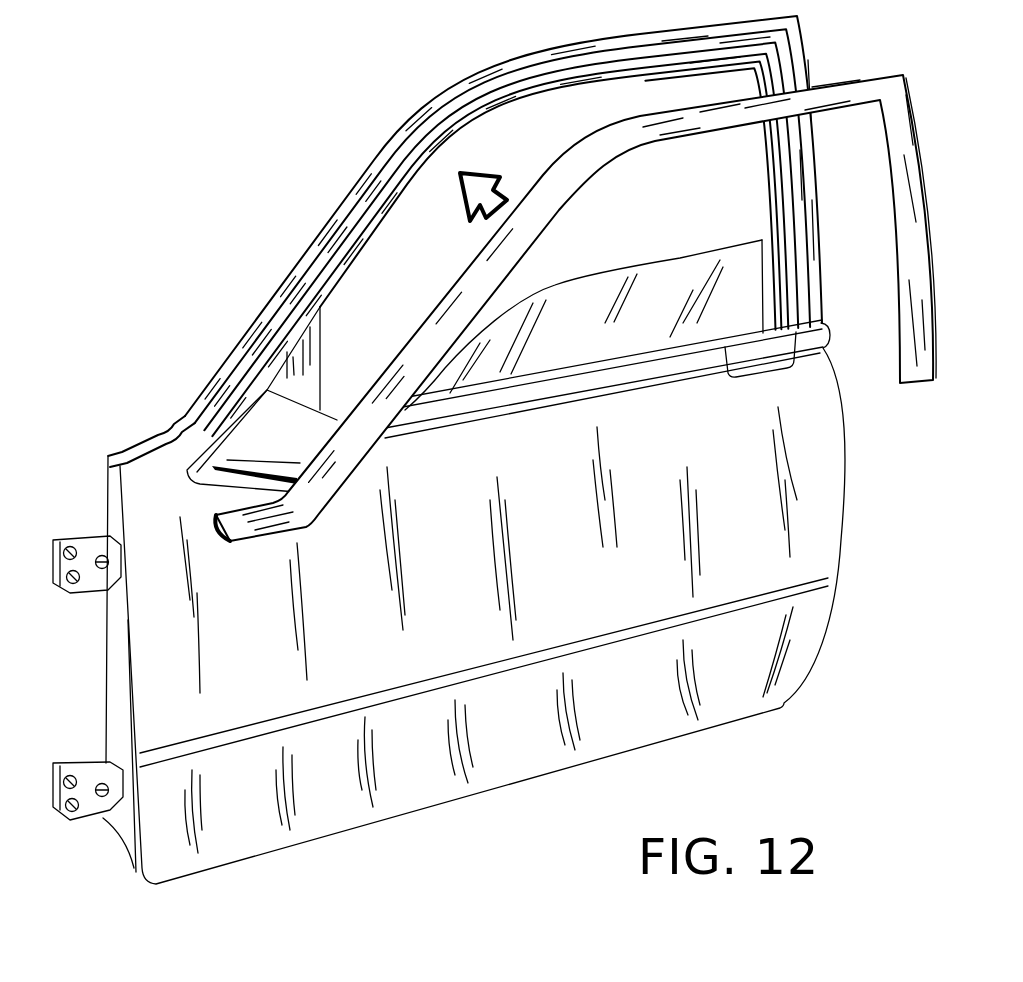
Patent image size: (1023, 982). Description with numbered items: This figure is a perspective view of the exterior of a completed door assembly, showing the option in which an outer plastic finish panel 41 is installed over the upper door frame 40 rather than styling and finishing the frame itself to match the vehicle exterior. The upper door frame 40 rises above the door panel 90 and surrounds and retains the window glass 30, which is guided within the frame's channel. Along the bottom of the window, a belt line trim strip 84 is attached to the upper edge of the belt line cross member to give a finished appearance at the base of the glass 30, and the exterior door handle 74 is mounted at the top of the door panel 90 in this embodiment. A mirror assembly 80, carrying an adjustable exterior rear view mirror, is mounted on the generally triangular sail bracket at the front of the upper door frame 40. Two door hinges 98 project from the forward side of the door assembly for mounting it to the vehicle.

The window glass 30 is at (707, 250).
The upper door frame 40 is at (420, 120).
The outer plastic finish panel 41 is at (913, 262).
The exterior door handle 74 is at (744, 350).
The mirror assembly 80 is at (340, 418).
The belt line trim strip 84 is at (616, 374).
The door panel 90 is at (841, 518).
The door hinges 98 is at (87, 538).